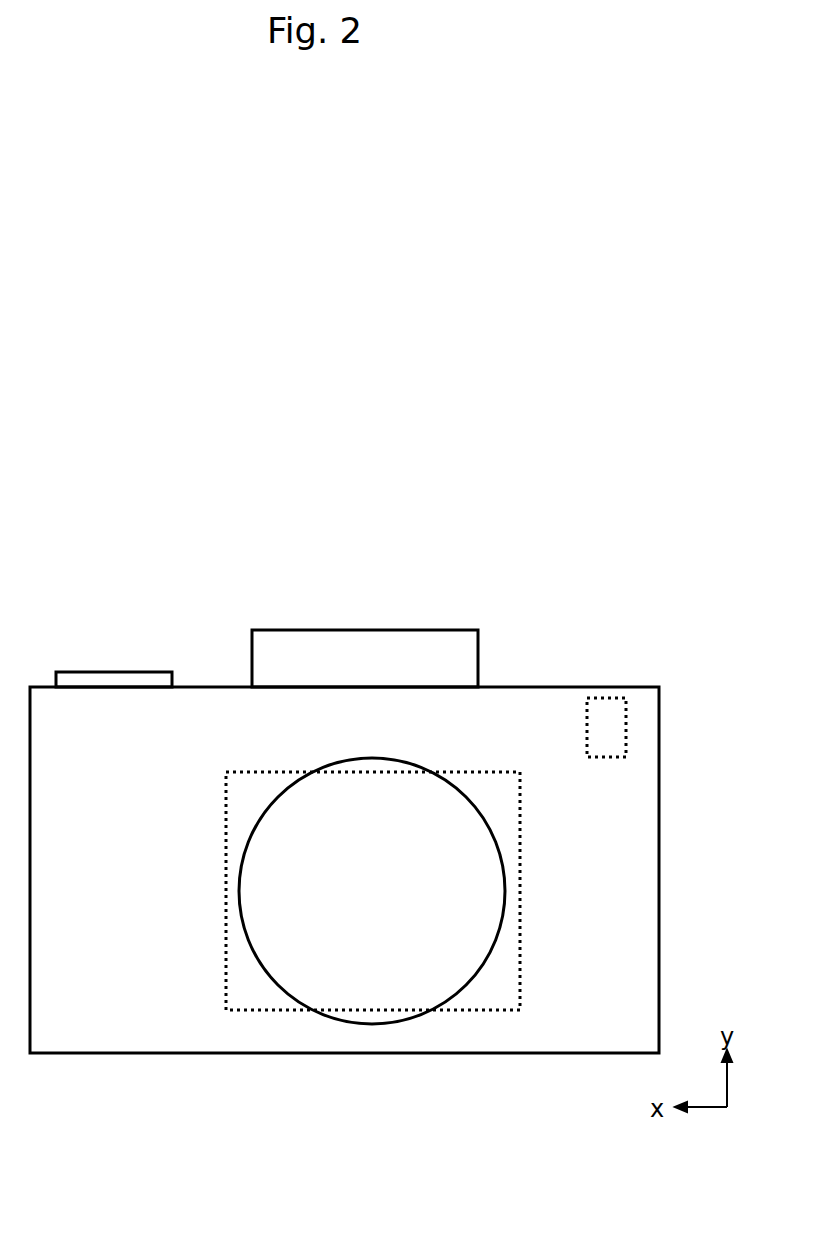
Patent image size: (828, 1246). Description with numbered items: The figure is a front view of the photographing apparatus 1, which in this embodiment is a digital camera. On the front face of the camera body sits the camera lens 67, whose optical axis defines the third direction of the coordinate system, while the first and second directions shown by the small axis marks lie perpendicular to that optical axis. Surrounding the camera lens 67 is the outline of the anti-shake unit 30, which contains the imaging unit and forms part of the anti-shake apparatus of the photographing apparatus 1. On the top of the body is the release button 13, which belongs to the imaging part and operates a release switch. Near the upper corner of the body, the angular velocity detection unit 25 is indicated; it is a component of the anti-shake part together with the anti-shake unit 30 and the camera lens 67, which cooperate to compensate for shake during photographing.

The photographing apparatus 1 is at (659, 687).
The release button 13 is at (96, 672).
The angular velocity detection unit 25 is at (617, 698).
The anti-shake unit 30 is at (226, 905).
The camera lens 67 is at (255, 825).